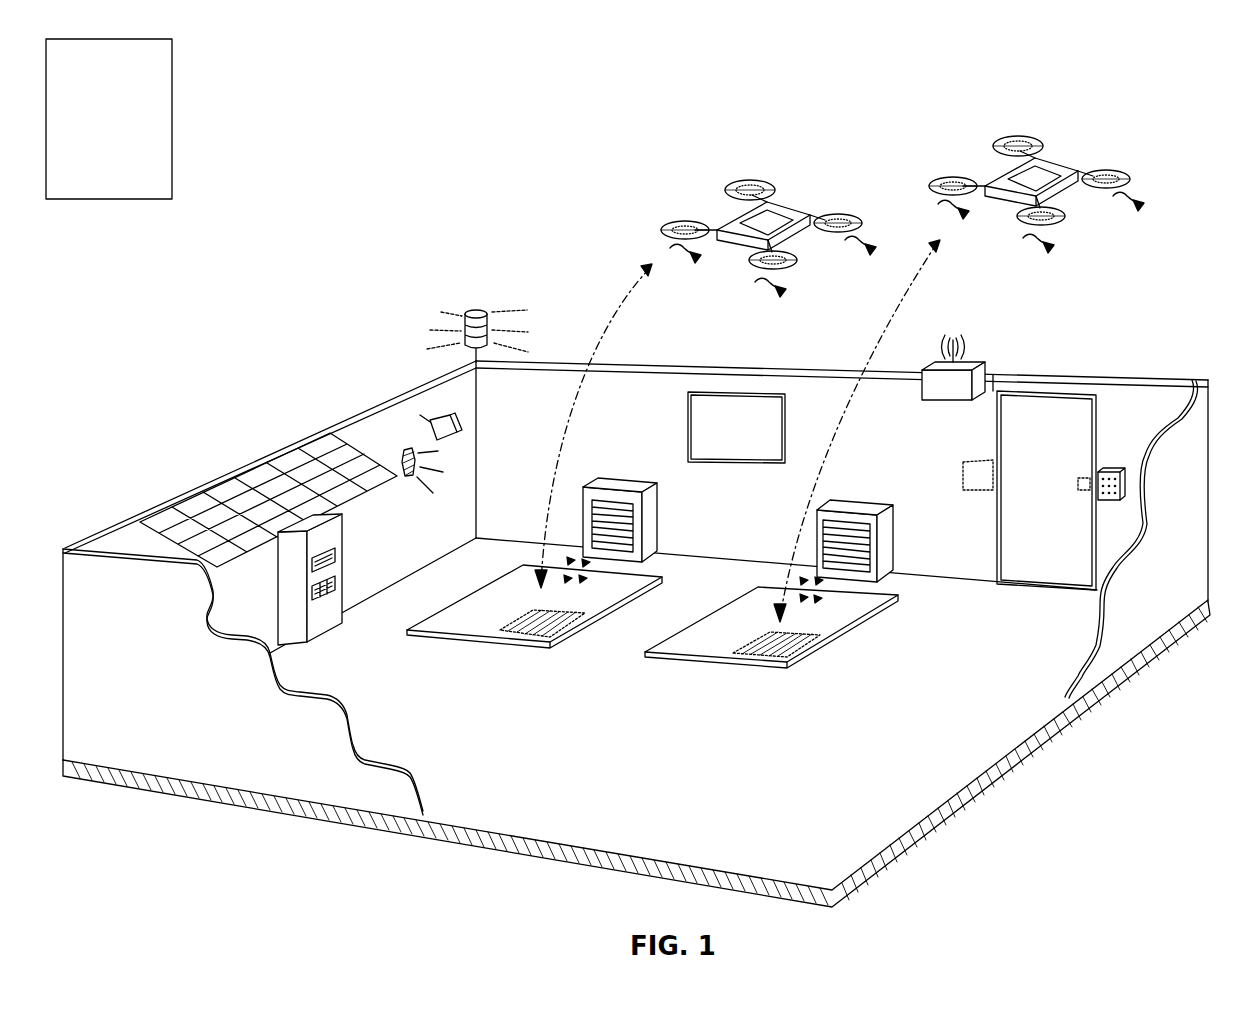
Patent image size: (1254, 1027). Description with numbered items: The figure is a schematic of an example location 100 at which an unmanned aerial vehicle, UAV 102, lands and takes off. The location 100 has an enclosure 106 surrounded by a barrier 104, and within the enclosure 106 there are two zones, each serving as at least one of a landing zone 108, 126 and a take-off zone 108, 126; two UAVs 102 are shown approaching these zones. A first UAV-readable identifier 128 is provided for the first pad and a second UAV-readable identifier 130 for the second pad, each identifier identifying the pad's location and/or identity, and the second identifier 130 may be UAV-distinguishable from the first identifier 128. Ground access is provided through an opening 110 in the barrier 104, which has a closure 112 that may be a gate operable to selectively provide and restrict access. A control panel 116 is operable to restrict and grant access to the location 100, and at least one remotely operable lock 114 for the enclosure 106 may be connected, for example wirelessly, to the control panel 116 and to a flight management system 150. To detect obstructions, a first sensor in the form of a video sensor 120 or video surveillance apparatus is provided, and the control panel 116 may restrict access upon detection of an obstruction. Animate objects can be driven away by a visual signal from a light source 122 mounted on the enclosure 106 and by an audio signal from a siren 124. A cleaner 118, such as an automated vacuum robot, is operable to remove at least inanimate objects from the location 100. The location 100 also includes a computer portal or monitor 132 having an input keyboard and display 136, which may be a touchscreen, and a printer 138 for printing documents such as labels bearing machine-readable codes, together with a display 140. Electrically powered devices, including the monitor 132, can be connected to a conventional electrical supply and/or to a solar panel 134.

The location 100 is at (200, 245).
The unmanned aerial vehicle 102 is at (718, 206).
The barrier 104 is at (1072, 385).
The enclosure 106 is at (529, 819).
The landing zone 108 is at (472, 617).
The opening 110 is at (997, 393).
The closure 112 is at (1027, 400).
The remotely operable lock 114 is at (1078, 483).
The control panel 116 is at (912, 370).
The cleaner 118 is at (625, 483).
The video sensor 120 is at (440, 417).
The light source 122 is at (480, 313).
The siren 124 is at (407, 453).
The take-off zone 126 is at (837, 617).
The first UAV-readable identifier 128 is at (497, 642).
The second UAV-readable identifier 130 is at (817, 643).
The monitor 132 is at (315, 523).
The solar panel 134 is at (243, 488).
The input keyboard and display 136 is at (309, 552).
The printer 138 is at (308, 578).
The display 140 is at (752, 390).
The flight management system 150 is at (212, 131).